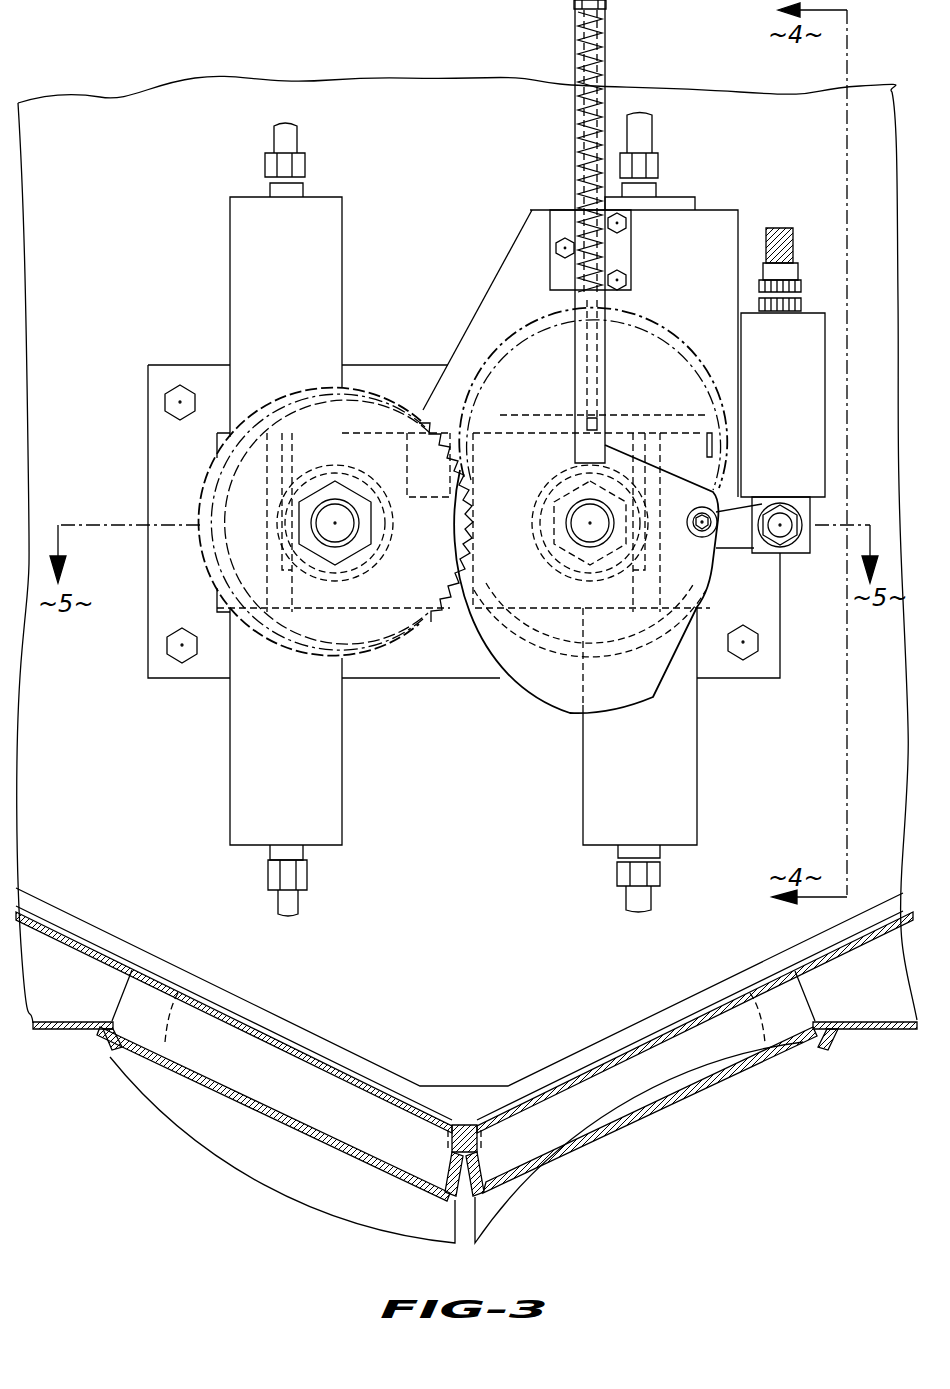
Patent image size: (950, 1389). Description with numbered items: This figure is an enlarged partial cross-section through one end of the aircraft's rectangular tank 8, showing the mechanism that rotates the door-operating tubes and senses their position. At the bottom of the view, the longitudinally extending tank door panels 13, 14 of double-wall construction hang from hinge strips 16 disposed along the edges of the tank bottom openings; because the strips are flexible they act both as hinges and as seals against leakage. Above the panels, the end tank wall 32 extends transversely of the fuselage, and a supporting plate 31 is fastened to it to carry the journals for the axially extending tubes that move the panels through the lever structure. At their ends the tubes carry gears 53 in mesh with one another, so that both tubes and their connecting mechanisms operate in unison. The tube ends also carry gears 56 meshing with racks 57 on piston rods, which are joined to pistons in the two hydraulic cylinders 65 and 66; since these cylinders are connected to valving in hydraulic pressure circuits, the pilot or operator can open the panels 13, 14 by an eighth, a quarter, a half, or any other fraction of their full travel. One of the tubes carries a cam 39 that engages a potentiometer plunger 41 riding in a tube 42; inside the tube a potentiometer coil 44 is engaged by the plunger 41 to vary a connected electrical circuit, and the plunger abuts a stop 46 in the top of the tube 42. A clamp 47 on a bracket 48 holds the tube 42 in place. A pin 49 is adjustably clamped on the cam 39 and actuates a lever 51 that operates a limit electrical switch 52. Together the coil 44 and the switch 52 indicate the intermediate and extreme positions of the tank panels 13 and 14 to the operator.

The tank 8 is at (403, 90).
The tank door panel 13 is at (250, 1178).
The tank door panel 14 is at (683, 1163).
The hinge strip 16 is at (112, 1045).
The supporting plate 31 is at (172, 680).
The end tank wall 32 is at (486, 948).
The cam 39 is at (532, 690).
The potentiometer plunger 41 is at (575, 338).
The tube 42 is at (575, 112).
The potentiometer coil 44 is at (600, 74).
The stop 46 is at (600, 12).
The clamp 47 is at (550, 232).
The bracket 48 is at (506, 266).
The pin 49 is at (708, 540).
The lever 51 is at (745, 538).
The limit electrical switch 52 is at (783, 362).
The gear 53 is at (364, 390).
The gear 56 is at (343, 472).
The rack 57 is at (266, 512).
The cylinder 65 is at (688, 210).
The cylinder 66 is at (232, 235).